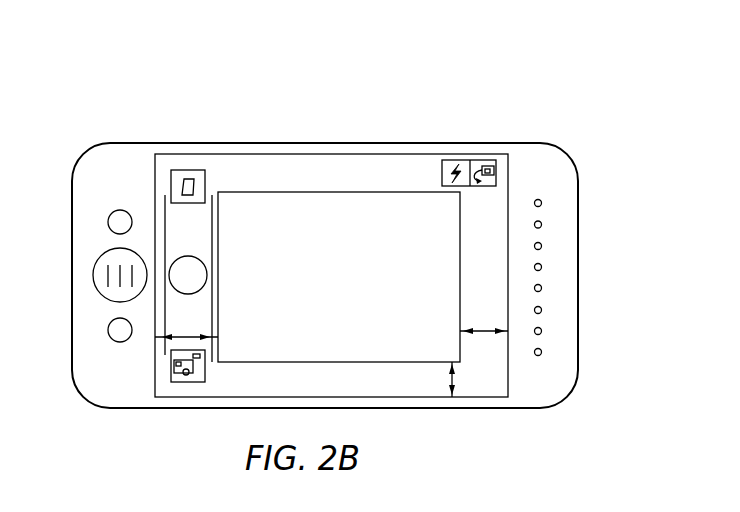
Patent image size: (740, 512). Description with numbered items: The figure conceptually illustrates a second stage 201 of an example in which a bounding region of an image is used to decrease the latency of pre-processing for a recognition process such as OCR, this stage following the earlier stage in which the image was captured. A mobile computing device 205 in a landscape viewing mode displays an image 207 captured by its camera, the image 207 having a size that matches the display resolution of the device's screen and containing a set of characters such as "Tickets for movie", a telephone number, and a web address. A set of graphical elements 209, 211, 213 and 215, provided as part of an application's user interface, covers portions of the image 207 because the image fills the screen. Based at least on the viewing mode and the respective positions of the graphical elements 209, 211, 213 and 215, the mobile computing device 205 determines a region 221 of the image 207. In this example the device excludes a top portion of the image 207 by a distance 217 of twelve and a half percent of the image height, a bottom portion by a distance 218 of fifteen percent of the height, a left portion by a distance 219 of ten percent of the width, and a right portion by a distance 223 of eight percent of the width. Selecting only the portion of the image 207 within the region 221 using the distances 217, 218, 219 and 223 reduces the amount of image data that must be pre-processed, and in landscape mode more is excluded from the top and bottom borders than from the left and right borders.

The second stage 201 is at (569, 116).
The mobile computing device 205 is at (124, 132).
The image 207 is at (343, 173).
The graphical element 209 is at (460, 160).
The graphical element 211 is at (188, 170).
The graphical element 213 is at (187, 275).
The graphical element 215 is at (188, 380).
The distance 217 is at (390, 184).
The distance 218 is at (453, 378).
The distance 219 is at (183, 337).
The region 221 is at (298, 192).
The distance 223 is at (483, 331).